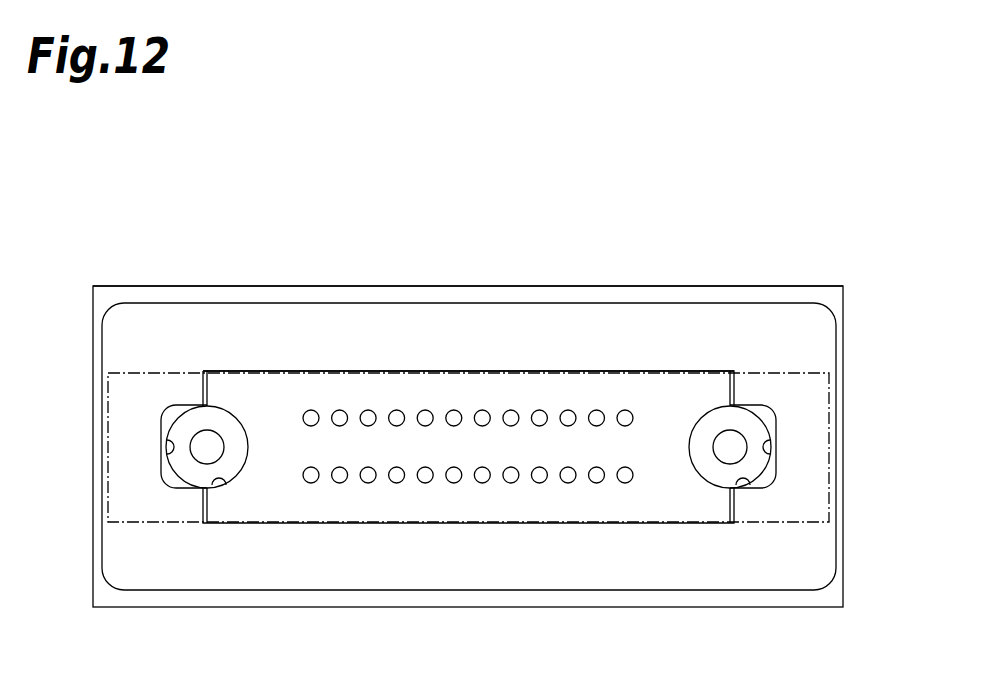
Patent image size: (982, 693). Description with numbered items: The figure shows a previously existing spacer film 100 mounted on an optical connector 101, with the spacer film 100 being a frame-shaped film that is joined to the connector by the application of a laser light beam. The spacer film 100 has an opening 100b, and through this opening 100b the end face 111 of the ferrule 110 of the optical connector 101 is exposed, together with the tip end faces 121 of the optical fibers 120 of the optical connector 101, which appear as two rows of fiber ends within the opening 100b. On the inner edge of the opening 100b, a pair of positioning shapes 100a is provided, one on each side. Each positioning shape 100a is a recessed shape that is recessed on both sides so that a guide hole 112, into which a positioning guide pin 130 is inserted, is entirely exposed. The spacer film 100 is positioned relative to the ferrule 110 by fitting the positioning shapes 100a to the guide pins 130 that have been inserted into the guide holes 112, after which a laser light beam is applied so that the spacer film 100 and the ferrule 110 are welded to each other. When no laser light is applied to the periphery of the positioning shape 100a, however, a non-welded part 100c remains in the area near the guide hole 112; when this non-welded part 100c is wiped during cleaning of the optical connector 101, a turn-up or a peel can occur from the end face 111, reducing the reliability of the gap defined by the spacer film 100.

The spacer film 100 is at (650, 302).
The positioning shape 100a is at (163, 453).
The opening 100b is at (612, 375).
The non-welded part 100c is at (157, 372).
The optical connector 101 is at (432, 286).
The ferrule 110 is at (347, 285).
The end face 111 is at (447, 512).
The guide hole 112 is at (213, 482).
The optical fiber 120 is at (476, 495).
The tip end face 121 is at (568, 483).
The positioning guide pin 130 is at (208, 440).